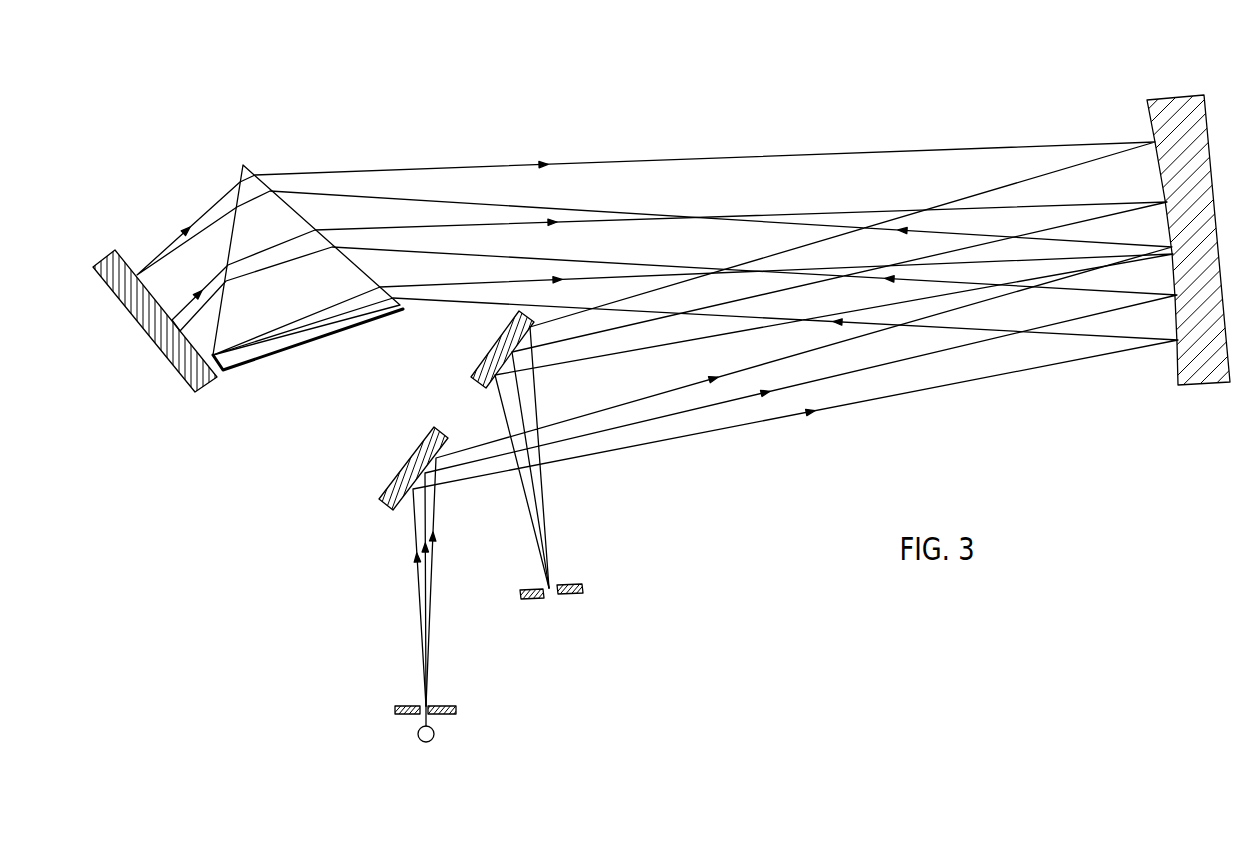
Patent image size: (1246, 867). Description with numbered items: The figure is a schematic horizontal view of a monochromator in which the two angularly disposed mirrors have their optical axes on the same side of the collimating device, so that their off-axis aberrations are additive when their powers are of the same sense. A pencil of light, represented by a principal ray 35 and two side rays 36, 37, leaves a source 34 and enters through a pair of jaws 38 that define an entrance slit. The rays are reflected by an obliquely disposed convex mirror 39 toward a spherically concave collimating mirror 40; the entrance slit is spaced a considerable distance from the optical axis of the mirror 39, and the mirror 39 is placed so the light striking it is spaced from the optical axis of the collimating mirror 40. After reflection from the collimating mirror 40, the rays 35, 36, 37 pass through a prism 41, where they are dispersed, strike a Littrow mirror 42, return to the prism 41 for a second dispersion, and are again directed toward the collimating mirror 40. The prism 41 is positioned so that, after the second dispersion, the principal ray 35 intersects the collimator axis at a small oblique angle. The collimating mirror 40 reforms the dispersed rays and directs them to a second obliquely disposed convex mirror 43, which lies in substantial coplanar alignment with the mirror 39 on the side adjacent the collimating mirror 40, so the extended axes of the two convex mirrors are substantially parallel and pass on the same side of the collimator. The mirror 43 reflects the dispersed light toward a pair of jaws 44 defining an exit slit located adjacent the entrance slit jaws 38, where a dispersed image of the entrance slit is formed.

The source 34 is at (417, 733).
The principal ray 35 is at (522, 224).
The side ray 36 is at (540, 166).
The side ray 37 is at (515, 282).
The entrance slit jaws 38 is at (457, 709).
The convex mirror 39 is at (397, 465).
The collimating mirror 40 is at (1202, 387).
The prism 41 is at (310, 342).
The Littrow mirror 42 is at (205, 383).
The convex mirror 43 is at (492, 345).
The exit slit jaws 44 is at (583, 587).